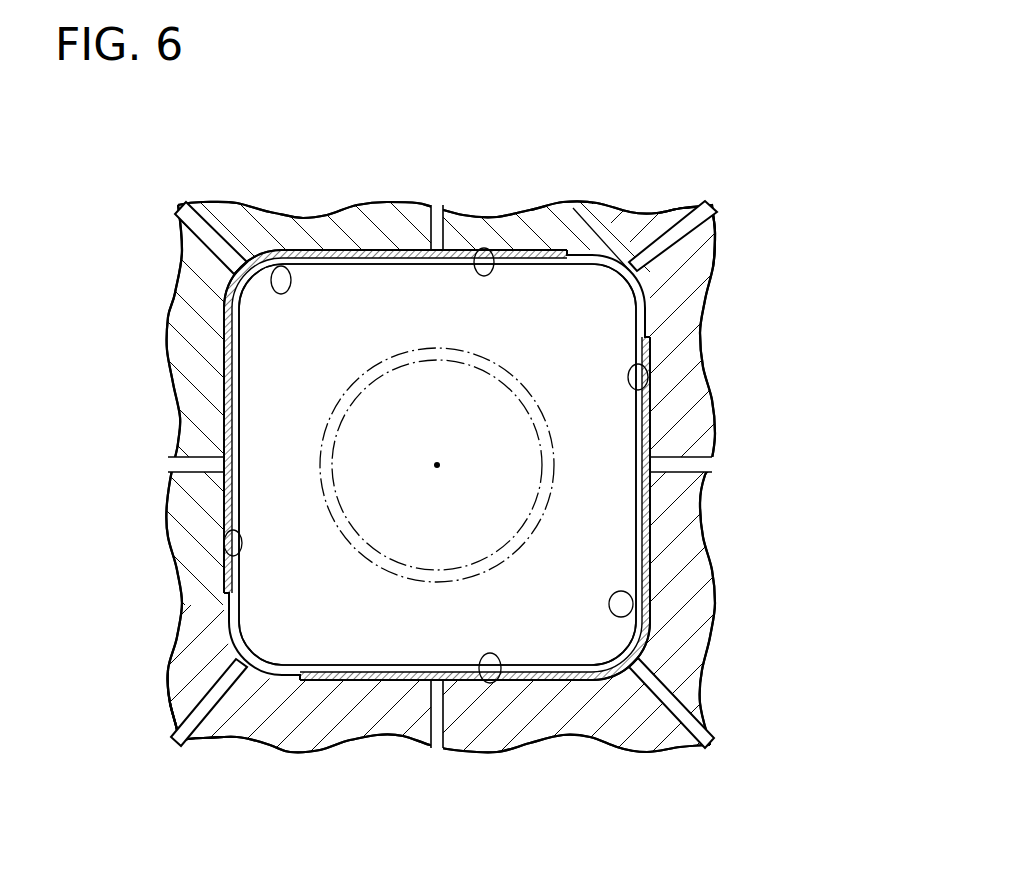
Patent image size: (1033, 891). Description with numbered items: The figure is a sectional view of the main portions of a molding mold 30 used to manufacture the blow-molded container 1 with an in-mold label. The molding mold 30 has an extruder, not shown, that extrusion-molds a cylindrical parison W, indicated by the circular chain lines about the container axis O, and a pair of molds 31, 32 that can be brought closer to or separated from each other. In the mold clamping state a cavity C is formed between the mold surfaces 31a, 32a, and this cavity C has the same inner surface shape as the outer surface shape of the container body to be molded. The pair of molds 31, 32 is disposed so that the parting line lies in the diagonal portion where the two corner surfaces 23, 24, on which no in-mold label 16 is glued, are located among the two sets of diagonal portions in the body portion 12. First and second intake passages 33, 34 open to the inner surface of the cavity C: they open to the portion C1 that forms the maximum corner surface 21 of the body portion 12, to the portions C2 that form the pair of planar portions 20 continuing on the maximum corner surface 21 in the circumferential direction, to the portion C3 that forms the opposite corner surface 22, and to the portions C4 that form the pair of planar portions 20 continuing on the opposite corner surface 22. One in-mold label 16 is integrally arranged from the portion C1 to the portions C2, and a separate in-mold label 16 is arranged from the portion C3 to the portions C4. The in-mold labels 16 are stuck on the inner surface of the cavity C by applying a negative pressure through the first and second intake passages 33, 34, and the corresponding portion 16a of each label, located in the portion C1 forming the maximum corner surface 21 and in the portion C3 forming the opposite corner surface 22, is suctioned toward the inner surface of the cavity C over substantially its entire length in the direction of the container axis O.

The blow-molded container with an in-mold label 1 is at (529, 238).
The body portion 12 is at (215, 418).
The in-mold label 16 is at (211, 576).
The corresponding portion 16a is at (242, 288).
The planar portion 20 is at (407, 250).
The maximum corner surface 21 is at (605, 650).
The opposite corner surface 22 is at (236, 280).
The corner surface 23 is at (248, 665).
The corner surface 24 is at (626, 270).
The molding mold 30 is at (718, 170).
The mold 31 is at (722, 246).
The mold surface 31a is at (661, 222).
The mold 32 is at (568, 193).
The mold surface 32a is at (690, 262).
The first intake passage 33 is at (185, 216).
The second intake passage 34 is at (437, 205).
The container axis O is at (437, 462).
The parison W is at (389, 341).
The cavity C is at (266, 345).
The portion forming the maximum corner surface C1 is at (633, 600).
The portions forming the planar portions C2 is at (648, 364).
The portion forming the opposite corner surface C3 is at (287, 268).
The portions forming the planar portions C4 is at (485, 249).